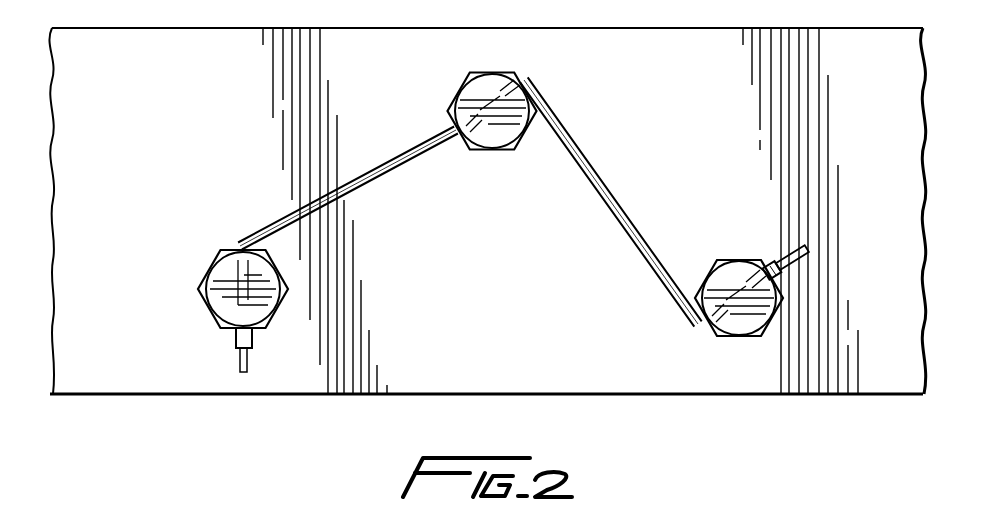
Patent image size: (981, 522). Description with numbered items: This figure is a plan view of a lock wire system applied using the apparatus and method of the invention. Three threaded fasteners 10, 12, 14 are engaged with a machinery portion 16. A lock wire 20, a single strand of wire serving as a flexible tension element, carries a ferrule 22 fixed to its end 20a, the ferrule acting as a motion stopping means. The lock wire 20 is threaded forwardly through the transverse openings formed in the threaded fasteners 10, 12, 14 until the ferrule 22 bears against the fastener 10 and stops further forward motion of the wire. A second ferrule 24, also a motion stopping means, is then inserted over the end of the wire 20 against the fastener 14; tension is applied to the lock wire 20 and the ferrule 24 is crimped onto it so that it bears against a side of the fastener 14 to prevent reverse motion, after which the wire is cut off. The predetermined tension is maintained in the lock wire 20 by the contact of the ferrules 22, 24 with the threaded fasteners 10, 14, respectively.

The threaded fastener 10 is at (225, 268).
The threaded fastener 12 is at (500, 138).
The threaded fastener 14 is at (722, 270).
The machinery portion 16 is at (563, 368).
The lock wire 20 is at (601, 177).
The end of lock wire 20a is at (240, 360).
The ferrule 22 is at (252, 336).
The ferrule 24 is at (776, 263).